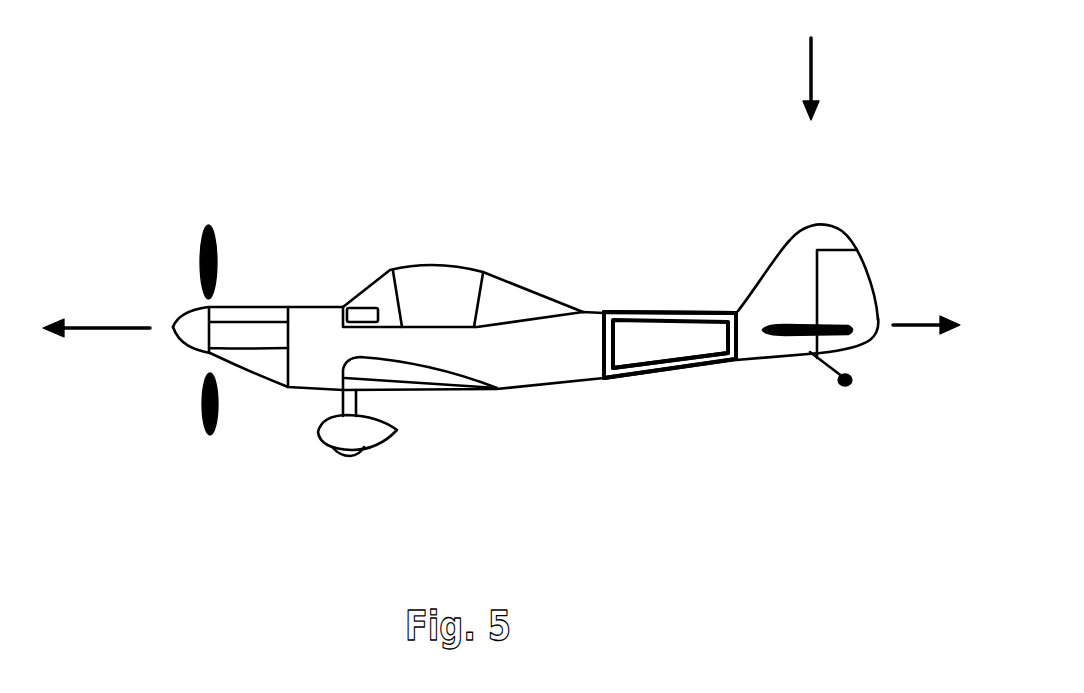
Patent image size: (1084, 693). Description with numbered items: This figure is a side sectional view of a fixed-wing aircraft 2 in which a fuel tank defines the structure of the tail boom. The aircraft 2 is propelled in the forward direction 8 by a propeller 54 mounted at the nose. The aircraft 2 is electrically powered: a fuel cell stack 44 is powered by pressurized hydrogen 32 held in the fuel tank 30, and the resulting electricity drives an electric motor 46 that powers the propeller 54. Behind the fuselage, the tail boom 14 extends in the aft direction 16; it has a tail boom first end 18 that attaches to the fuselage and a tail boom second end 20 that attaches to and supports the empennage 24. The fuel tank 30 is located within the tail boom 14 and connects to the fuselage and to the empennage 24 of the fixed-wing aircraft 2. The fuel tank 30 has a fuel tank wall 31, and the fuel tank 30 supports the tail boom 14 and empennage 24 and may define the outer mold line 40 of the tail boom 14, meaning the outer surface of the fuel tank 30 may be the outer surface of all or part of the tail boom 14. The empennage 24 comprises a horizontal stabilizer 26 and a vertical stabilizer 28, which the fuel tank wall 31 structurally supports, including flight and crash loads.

The aircraft 2 is at (352, 125).
The forward direction 8 is at (108, 328).
The tail boom 14 is at (660, 314).
The aft direction 16 is at (922, 325).
The tail boom first end 18 is at (606, 378).
The tail boom second end 20 is at (737, 358).
The empennage 24 is at (810, 63).
The horizontal stabilizer 26 is at (795, 336).
The vertical stabilizer 28 is at (788, 266).
The fuel tank 30 is at (707, 338).
The fuel tank wall 31 is at (640, 318).
The pressurized hydrogen 32 is at (659, 340).
The outer mold line 40 is at (637, 372).
The fuel cell stack 44 is at (312, 355).
The electric motor 46 is at (244, 333).
The propeller 54 is at (203, 405).